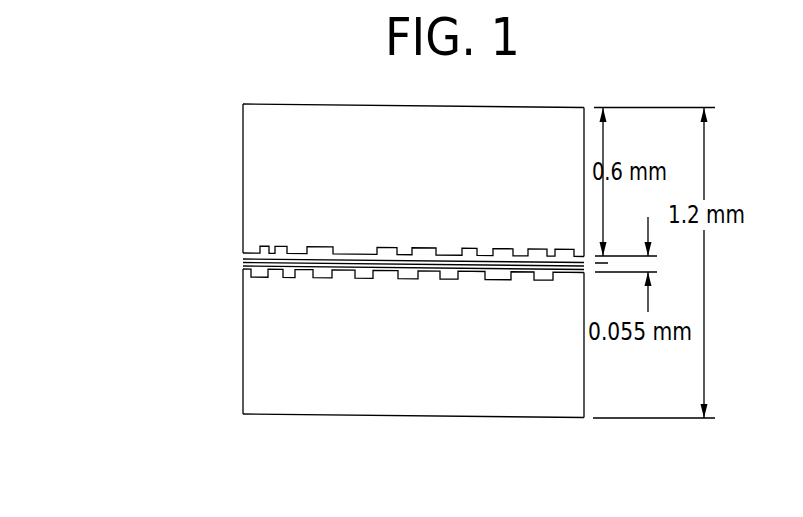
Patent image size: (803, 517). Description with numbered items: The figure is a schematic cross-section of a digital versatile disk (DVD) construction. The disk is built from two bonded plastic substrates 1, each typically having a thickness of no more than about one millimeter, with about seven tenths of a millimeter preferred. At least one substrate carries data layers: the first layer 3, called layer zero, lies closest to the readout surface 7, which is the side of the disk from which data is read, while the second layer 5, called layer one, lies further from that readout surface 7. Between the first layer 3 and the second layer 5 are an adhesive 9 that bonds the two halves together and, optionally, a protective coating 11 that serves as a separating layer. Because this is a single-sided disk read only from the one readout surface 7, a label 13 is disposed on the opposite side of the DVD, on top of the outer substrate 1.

The label 13 is at (225, 105).
The substrate 1 is at (225, 140).
The second layer 5 is at (225, 380).
The protective coating 11 is at (226, 271).
The adhesive 9 is at (225, 259).
The first layer 3 is at (226, 288).
The readout surface 7 is at (225, 413).